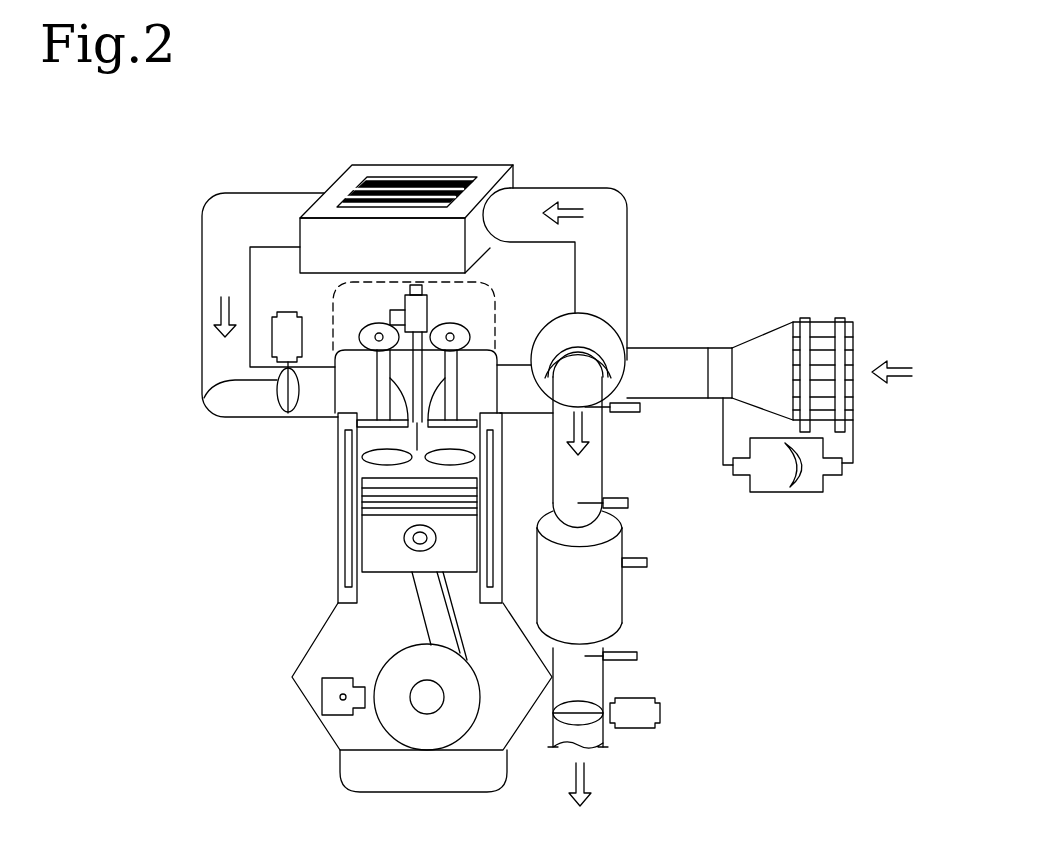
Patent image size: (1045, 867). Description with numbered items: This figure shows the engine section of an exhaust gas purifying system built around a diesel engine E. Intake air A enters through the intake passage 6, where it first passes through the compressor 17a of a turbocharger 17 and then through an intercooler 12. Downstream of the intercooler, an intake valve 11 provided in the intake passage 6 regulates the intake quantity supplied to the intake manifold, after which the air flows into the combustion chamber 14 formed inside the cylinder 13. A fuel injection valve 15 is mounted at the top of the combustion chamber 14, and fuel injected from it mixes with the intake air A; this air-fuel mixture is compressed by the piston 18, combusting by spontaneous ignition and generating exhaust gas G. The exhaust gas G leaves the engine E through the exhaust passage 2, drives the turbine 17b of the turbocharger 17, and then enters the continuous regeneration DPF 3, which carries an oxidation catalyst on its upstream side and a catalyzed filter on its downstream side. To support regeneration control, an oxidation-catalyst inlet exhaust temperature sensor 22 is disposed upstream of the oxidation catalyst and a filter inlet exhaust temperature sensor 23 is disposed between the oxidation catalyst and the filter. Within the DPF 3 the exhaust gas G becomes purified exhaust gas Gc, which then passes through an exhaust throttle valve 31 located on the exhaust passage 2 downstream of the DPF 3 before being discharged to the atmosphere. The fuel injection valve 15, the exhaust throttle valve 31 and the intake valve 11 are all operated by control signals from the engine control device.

The exhaust passage 2 is at (605, 677).
The continuous regeneration DPF 3 is at (607, 585).
The intake passage 6 is at (220, 243).
The intake valve 11 is at (204, 397).
The intercooler 12 is at (463, 163).
The cylinder 13 is at (362, 478).
The combustion chamber 14 is at (370, 441).
The fuel injection valve 15 is at (427, 310).
The turbocharger 17 is at (671, 324).
The compressor 17a is at (597, 325).
The turbine 17b is at (603, 342).
The piston 18 is at (380, 551).
The oxidation-catalyst inlet exhaust temperature sensor 22 is at (628, 493).
The filter inlet exhaust temperature sensor 23 is at (645, 552).
The exhaust throttle valve 31 is at (593, 702).
The diesel engine E is at (336, 532).
The intake air A is at (217, 315).
The exhaust gas G is at (585, 423).
The purified exhaust gas Gc is at (603, 785).